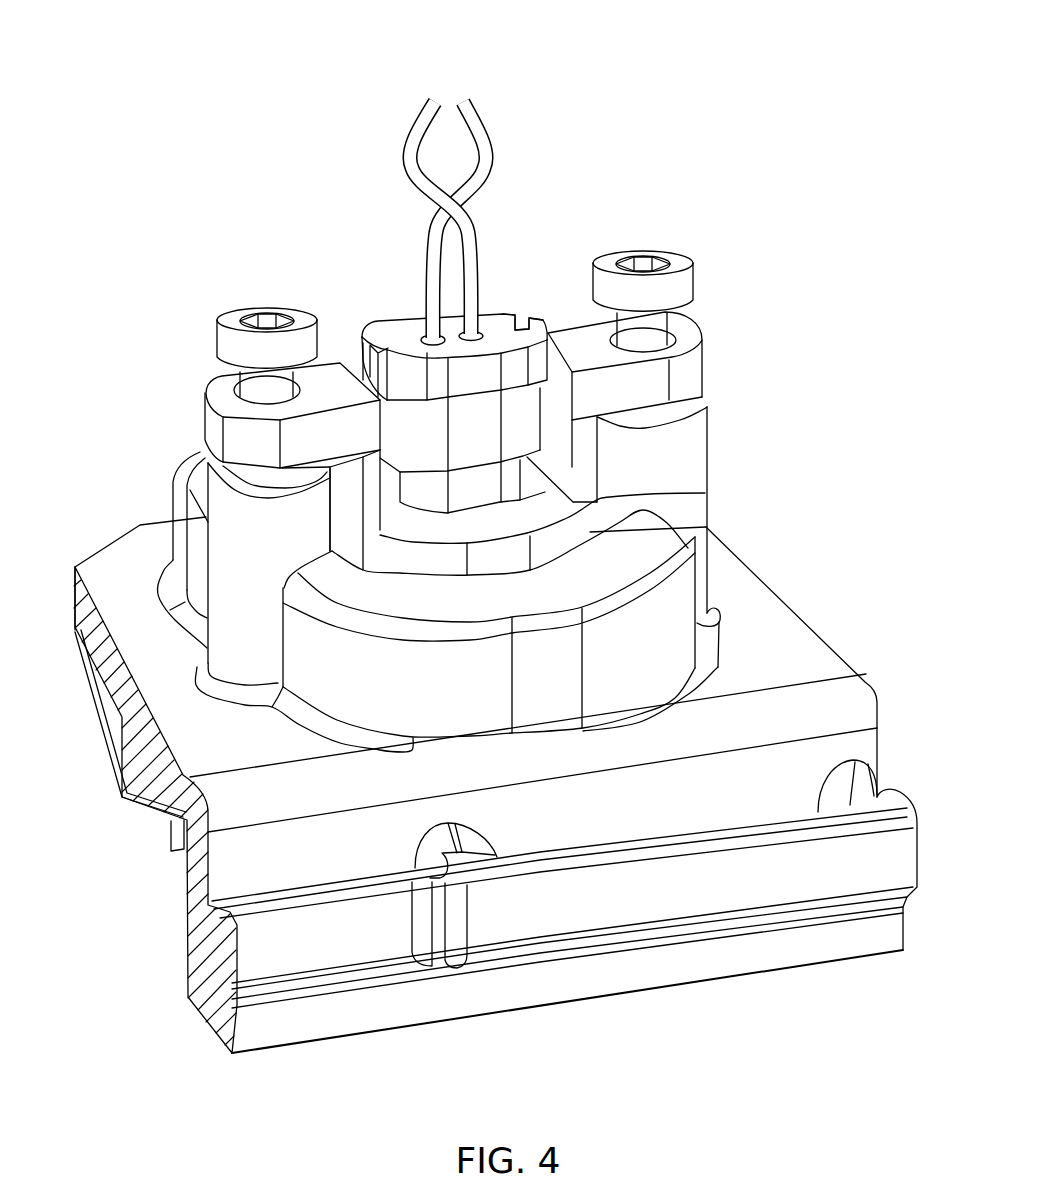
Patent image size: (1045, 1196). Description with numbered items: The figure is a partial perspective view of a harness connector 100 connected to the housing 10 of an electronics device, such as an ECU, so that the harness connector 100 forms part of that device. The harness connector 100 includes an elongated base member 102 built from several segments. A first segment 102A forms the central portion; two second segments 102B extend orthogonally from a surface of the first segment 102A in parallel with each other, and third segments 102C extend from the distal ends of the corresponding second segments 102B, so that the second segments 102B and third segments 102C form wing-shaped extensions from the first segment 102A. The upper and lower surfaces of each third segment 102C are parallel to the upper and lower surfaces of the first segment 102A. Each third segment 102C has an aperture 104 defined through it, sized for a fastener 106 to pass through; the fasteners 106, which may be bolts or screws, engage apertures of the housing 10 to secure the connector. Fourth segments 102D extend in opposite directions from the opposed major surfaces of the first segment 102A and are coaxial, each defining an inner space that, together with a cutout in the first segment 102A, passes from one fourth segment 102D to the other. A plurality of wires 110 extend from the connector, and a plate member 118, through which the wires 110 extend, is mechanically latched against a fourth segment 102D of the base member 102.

The housing 10 is at (797, 648).
The harness connector 100 is at (642, 76).
The base member 102 is at (468, 500).
The first segment 102A is at (565, 540).
The second segments 102B is at (340, 505).
The third segments 102C is at (218, 431).
The fourth segments 102D is at (415, 425).
The aperture 104 is at (226, 390).
The fasteners 106 is at (240, 322).
The wires 110 is at (418, 152).
The plate member 118 is at (490, 328).